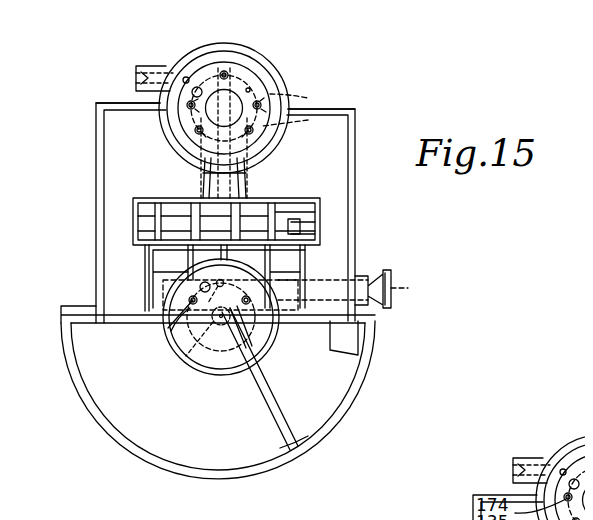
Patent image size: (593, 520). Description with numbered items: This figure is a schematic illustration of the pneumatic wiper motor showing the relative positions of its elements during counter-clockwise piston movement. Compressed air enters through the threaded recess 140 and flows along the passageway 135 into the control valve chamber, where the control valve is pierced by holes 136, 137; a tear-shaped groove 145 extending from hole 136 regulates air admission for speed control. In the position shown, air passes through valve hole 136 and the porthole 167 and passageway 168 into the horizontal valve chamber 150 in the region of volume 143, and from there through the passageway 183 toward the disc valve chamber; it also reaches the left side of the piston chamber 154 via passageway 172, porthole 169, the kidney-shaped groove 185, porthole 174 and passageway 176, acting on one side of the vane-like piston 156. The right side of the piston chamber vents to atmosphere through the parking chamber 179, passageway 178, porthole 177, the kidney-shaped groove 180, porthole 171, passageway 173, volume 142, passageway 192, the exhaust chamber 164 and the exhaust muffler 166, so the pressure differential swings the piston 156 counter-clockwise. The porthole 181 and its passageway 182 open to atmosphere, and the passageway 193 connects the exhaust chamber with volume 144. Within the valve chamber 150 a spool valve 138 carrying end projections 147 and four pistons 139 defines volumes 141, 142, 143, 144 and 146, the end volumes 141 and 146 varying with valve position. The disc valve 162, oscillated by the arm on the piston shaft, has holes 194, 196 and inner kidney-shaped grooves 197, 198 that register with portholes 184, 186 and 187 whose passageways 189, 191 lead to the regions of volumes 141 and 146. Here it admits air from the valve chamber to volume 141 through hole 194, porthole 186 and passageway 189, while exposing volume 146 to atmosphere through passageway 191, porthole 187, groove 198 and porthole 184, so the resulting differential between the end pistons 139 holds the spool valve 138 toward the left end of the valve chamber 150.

The passageway 135 is at (157, 58).
The hole 136 is at (238, 62).
The hole 137 is at (181, 99).
The spool valve 138 is at (302, 222).
The pistons 139 is at (170, 223).
The threaded recess 140 is at (128, 60).
The volume 141 is at (312, 197).
The volume 142 is at (243, 196).
The volume 143 is at (198, 201).
The volume 144 is at (160, 197).
The tear-shaped groove 145 is at (246, 81).
The volume 146 is at (146, 200).
The end projections 147 is at (152, 209).
The horizontal valve chamber 150 is at (278, 206).
The piston chamber 154 is at (178, 440).
The vane-like piston 156 is at (260, 452).
The disc valve 162 is at (247, 332).
The exhaust chamber 164 is at (383, 283).
The exhaust muffler 166 is at (382, 290).
The porthole 167 is at (220, 66).
The passageway 168 is at (246, 170).
The porthole 169 is at (188, 122).
The porthole 171 is at (270, 126).
The passageway 172 is at (200, 166).
The passageway 173 is at (262, 140).
The porthole 174 is at (90, 96).
The passageway 176 is at (88, 158).
The porthole 177 is at (290, 96).
The passageway 178 is at (347, 152).
The parking chamber 179 is at (352, 334).
The kidney-shaped groove 180 is at (300, 112).
The porthole 181 is at (255, 82).
The passageway 182 is at (262, 89).
The passageway 183 is at (215, 252).
The porthole 184 is at (196, 336).
The kidney-shaped groove 185 is at (214, 62).
The porthole 186 is at (252, 316).
The porthole 187 is at (160, 321).
The passageway 189 is at (302, 252).
The passageway 191 is at (137, 259).
The passageway 192 is at (262, 249).
The passageway 193 is at (180, 262).
The hole 194 is at (243, 291).
The hole 196 is at (182, 291).
The kidney-shaped groove 197 is at (214, 345).
The kidney-shaped groove 198 is at (172, 328).